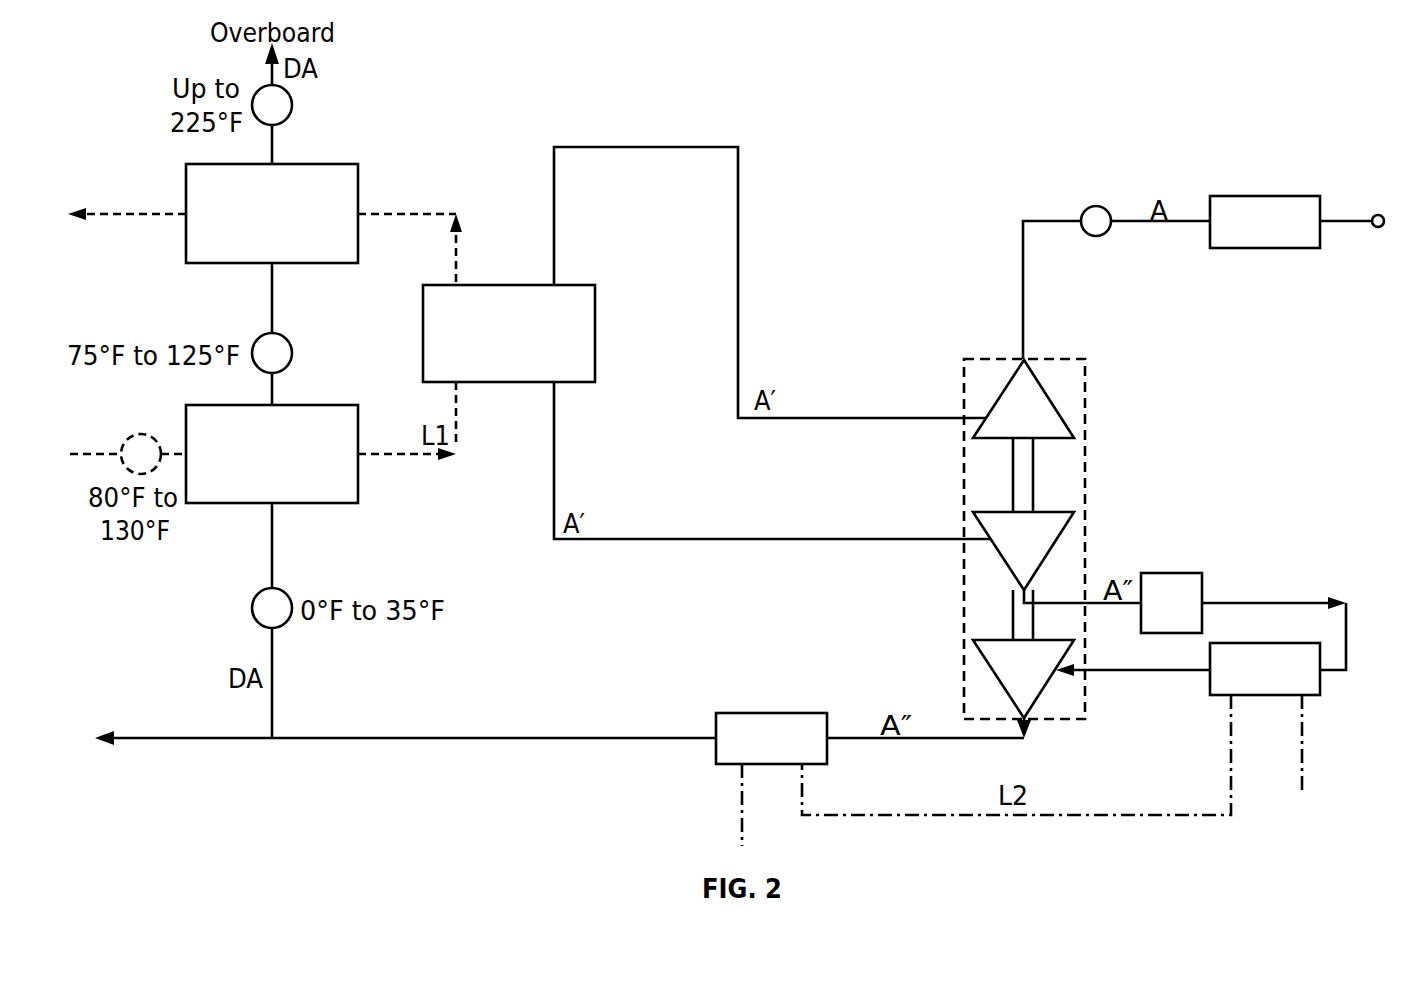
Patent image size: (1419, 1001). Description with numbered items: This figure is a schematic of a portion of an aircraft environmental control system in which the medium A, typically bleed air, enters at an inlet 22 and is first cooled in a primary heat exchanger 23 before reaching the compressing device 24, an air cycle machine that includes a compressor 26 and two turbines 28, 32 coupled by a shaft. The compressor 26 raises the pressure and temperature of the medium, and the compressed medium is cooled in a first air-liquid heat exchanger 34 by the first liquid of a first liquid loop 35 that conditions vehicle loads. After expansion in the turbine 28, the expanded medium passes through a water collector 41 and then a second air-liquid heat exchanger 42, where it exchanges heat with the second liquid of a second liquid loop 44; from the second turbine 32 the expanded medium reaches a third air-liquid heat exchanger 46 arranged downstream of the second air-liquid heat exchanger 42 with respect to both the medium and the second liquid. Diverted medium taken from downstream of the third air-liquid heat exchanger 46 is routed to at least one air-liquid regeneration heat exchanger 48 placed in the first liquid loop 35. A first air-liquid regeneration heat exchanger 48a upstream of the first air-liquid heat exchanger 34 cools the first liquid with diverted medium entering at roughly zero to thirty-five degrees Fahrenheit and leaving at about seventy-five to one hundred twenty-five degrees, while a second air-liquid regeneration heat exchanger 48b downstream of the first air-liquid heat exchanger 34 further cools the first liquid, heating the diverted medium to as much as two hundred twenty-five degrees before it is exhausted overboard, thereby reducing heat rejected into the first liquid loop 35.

The inlet 22 is at (1383, 215).
The primary heat exchanger 23 is at (1275, 195).
The compressing device 24 is at (1088, 346).
The compressor 26 is at (1046, 412).
The turbine 28 is at (993, 522).
The second turbine 32 is at (997, 653).
The first air-liquid heat exchanger 34 is at (597, 313).
The first liquid loop 35 is at (70, 461).
The water collector 41 is at (1172, 573).
The second air-liquid heat exchanger 42 is at (1280, 643).
The second liquid loop 44 is at (1190, 817).
The third air-liquid heat exchanger 46 is at (785, 710).
The air-liquid regeneration heat exchanger 48 is at (165, 740).
The first air-liquid regeneration heat exchanger 48a is at (358, 478).
The second air-liquid regeneration heat exchanger 48b is at (358, 181).